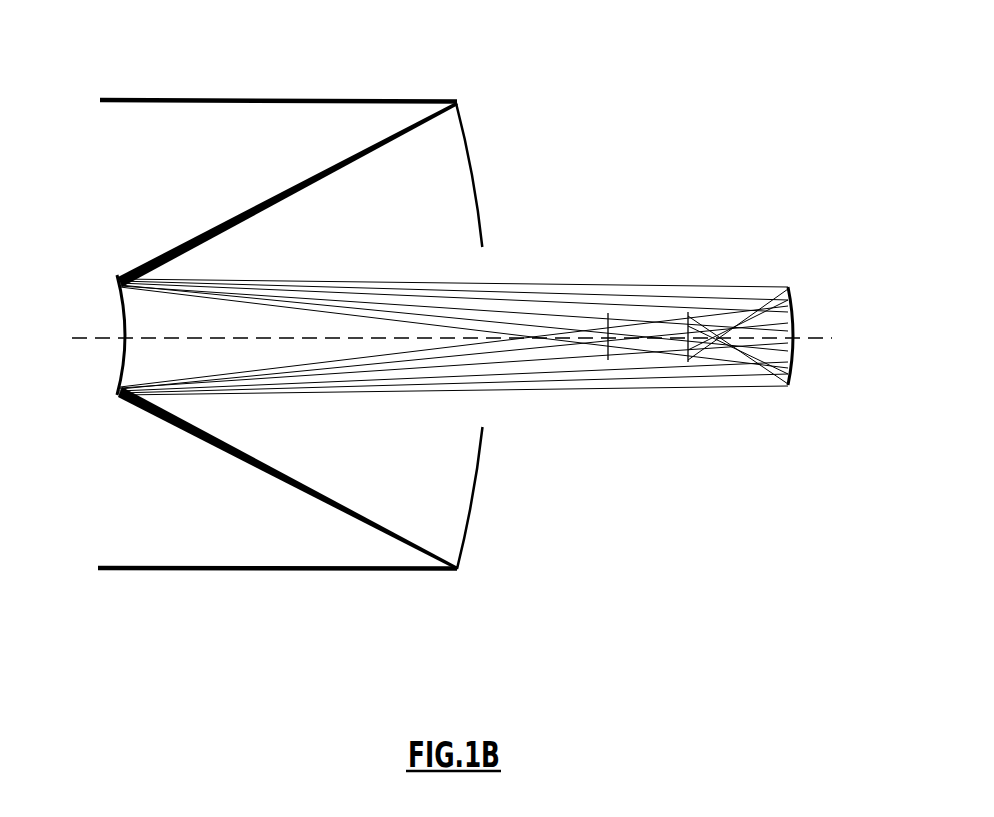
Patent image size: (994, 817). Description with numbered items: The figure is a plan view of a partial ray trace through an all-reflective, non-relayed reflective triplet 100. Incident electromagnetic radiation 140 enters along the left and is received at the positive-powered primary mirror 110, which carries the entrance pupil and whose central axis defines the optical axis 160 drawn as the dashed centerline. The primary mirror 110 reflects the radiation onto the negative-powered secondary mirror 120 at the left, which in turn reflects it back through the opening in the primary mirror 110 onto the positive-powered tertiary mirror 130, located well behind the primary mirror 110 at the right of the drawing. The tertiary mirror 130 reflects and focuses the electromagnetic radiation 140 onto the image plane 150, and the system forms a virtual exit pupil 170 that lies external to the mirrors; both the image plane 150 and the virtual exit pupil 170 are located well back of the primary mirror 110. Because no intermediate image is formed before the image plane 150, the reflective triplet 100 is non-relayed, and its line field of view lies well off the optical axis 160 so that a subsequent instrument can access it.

The reflective triplet 100 is at (640, 91).
The primary mirror 110 is at (495, 192).
The secondary mirror 120 is at (99, 303).
The tertiary mirror 130 is at (803, 287).
The incident electromagnetic radiation 140 is at (216, 88).
The image plane 150 is at (701, 374).
The optical axis 160 is at (74, 360).
The virtual exit pupil 170 is at (593, 370).